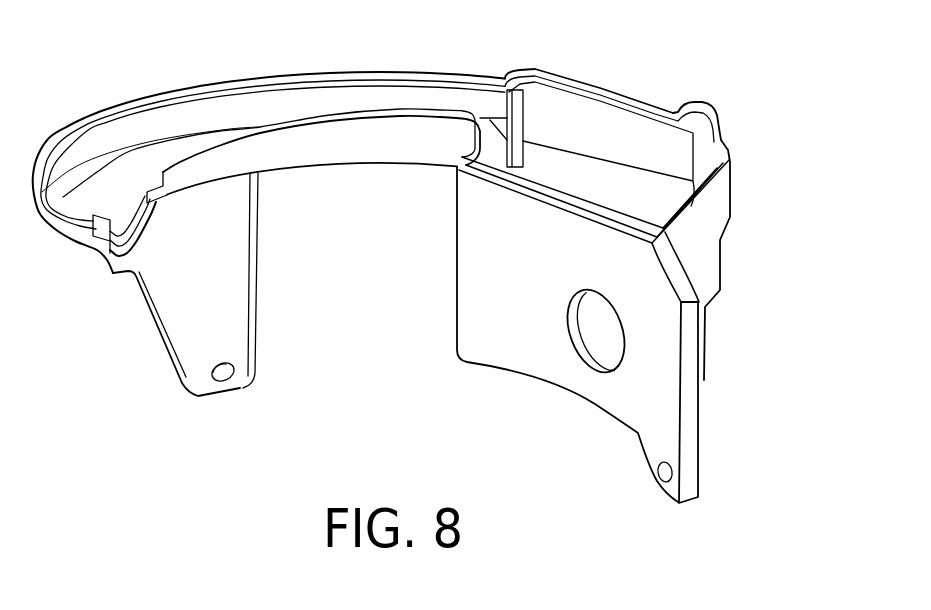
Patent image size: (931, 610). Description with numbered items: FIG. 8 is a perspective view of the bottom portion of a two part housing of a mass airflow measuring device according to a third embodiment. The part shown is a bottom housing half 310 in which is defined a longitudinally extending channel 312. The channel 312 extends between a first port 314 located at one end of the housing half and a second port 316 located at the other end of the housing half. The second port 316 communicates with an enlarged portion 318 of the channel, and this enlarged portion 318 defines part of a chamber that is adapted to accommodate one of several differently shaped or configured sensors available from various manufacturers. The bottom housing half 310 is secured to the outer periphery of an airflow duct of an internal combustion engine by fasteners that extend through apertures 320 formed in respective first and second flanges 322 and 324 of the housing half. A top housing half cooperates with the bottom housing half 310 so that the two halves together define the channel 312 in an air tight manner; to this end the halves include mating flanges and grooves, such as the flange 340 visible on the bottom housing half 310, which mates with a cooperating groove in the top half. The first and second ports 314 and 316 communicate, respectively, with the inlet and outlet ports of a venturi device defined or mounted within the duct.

The bottom housing half 310 is at (716, 412).
The longitudinally extending channel 312 is at (306, 104).
The first port 314 is at (146, 308).
The second port 316 is at (590, 343).
The enlarged portion 318 is at (592, 140).
The apertures 320 is at (229, 377).
The first flange 322 is at (227, 309).
The second flange 324 is at (692, 470).
The flange 340 is at (718, 163).